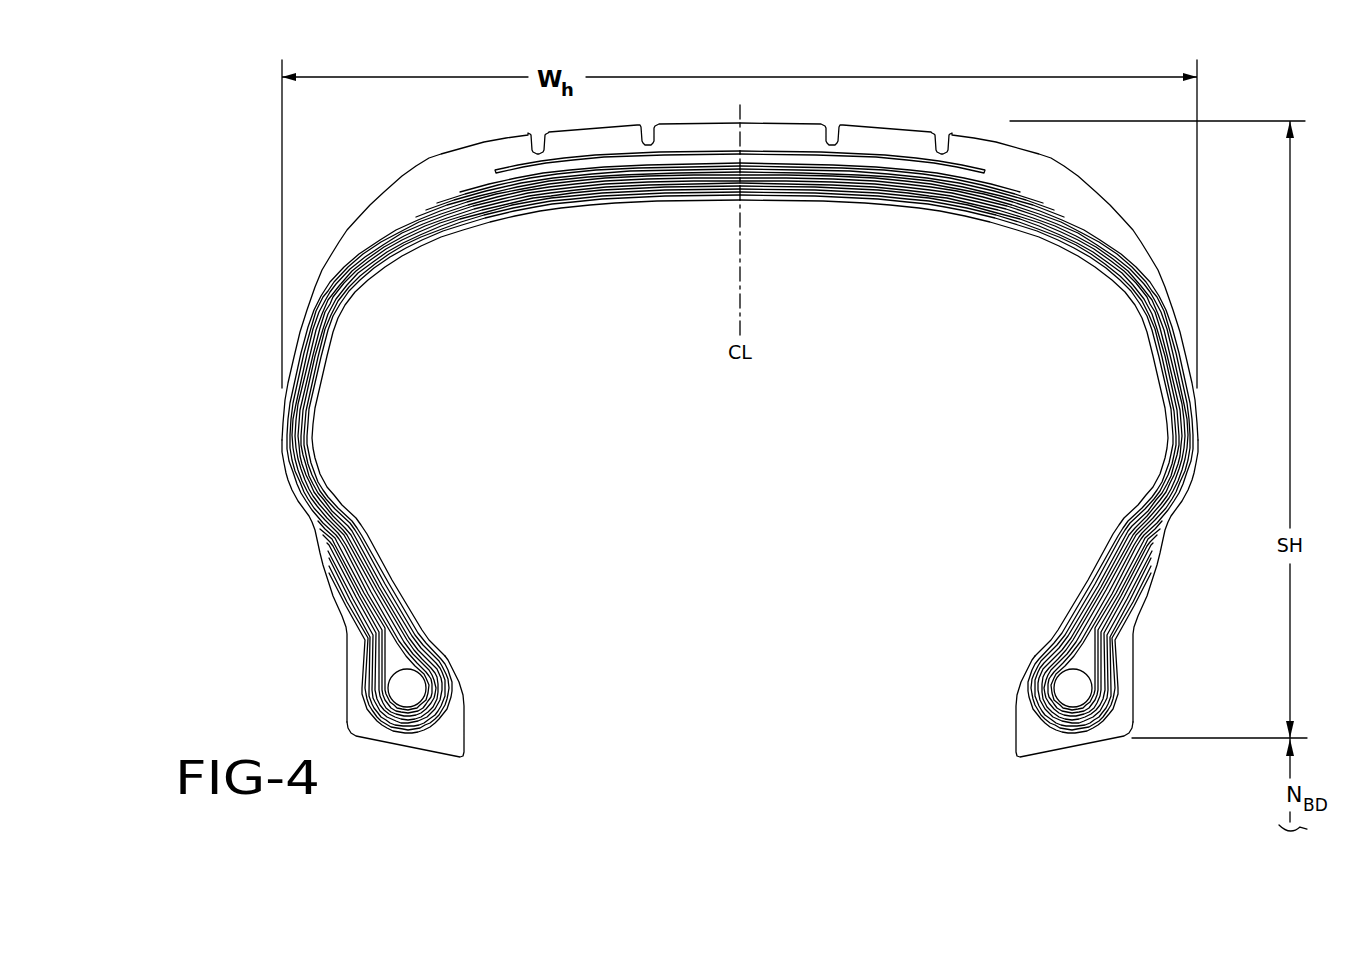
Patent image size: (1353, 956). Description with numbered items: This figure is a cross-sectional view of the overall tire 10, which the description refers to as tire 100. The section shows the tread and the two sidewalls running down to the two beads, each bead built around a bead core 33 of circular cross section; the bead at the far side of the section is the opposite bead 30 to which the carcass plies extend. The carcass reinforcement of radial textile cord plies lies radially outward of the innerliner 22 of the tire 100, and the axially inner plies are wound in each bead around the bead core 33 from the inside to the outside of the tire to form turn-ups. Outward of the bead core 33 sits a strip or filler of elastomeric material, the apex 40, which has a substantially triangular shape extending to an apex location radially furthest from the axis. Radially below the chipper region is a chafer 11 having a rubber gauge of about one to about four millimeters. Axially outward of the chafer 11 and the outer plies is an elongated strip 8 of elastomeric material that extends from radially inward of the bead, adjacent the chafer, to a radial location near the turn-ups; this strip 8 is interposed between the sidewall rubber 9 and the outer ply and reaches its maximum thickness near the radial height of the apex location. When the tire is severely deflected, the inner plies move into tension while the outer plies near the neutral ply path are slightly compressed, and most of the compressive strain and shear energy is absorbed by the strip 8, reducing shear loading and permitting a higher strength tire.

The pneumatic tire 10 is at (229, 197).
The tire 100 is at (466, 519).
The innerliner 22 is at (332, 528).
The sidewall rubber 9 is at (324, 578).
The elongated strip 8 is at (366, 657).
The apex 40 is at (397, 641).
The bead core 33 is at (421, 688).
The opposite bead 30 is at (415, 701).
The chafer 11 is at (373, 741).